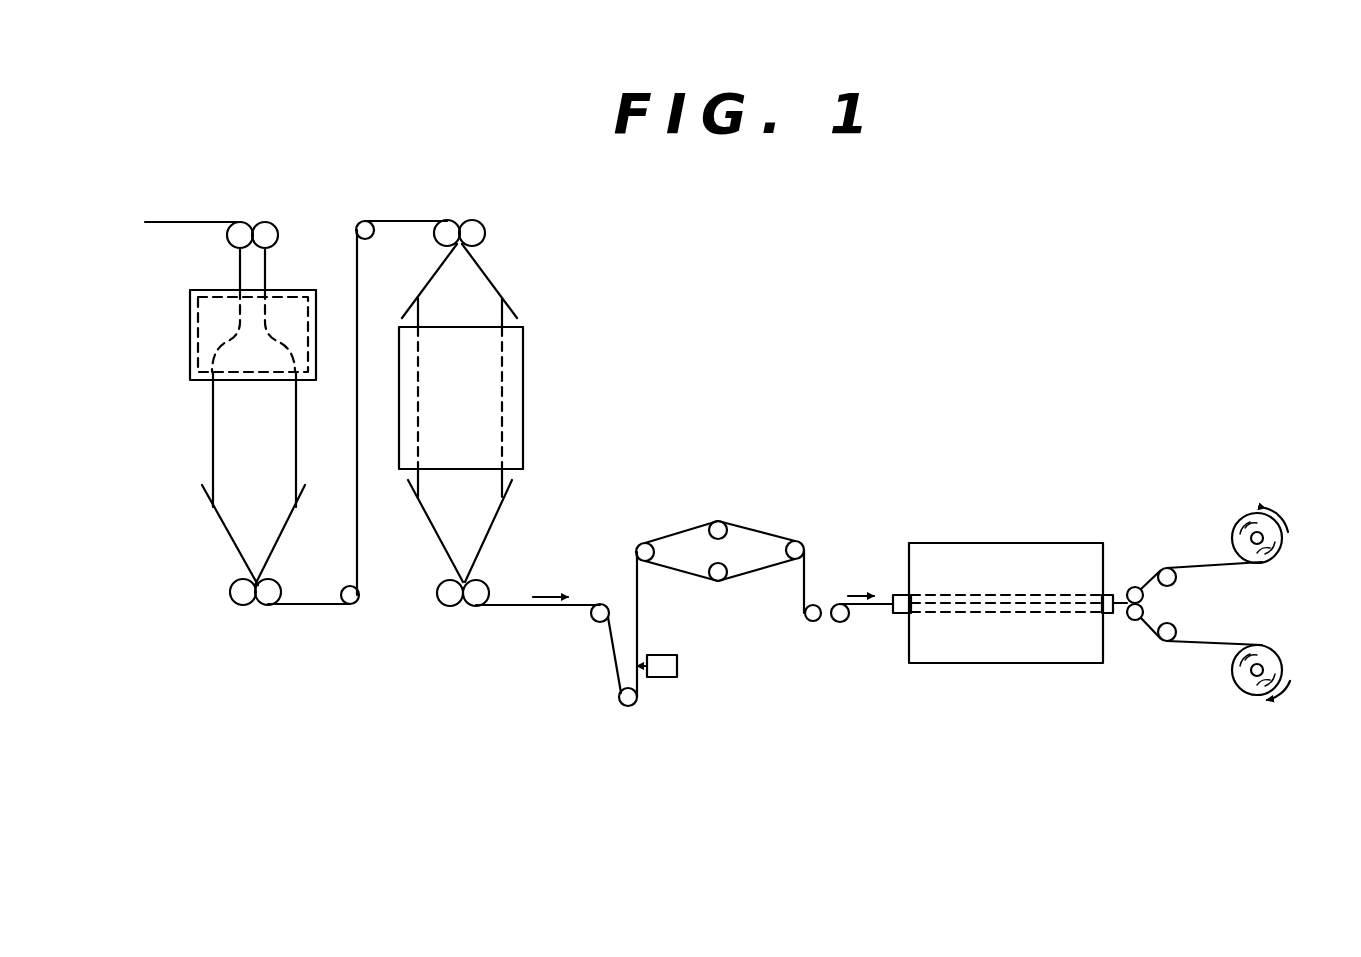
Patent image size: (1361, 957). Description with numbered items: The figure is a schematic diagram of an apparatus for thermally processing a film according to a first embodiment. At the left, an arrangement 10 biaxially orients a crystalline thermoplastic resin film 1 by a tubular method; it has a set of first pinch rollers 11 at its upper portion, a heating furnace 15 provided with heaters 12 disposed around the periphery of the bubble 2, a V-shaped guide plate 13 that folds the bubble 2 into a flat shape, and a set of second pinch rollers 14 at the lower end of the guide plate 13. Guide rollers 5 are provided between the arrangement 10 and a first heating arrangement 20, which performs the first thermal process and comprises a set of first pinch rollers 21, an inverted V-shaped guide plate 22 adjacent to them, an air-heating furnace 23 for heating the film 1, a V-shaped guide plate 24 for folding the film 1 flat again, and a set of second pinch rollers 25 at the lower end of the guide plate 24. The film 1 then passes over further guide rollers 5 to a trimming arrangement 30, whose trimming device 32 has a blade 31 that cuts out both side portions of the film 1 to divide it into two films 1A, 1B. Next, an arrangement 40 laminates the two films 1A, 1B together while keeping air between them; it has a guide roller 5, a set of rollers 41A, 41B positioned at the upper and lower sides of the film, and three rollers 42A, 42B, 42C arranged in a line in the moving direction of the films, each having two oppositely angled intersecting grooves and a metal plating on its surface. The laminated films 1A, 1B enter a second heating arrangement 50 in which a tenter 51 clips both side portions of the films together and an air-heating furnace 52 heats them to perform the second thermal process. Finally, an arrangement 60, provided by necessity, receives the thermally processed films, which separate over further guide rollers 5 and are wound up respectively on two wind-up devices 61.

The crystalline thermoplastic resin film 1 is at (190, 222).
The film part 1A is at (758, 530).
The film part 1B is at (765, 560).
The bubble 2 is at (298, 445).
The guide rollers 5 is at (366, 221).
The arrangement for biaxially orienting 10 is at (188, 362).
The first pinch rollers 11 is at (265, 226).
The heaters 12 is at (192, 308).
The V-shaped guide plate 13 is at (283, 537).
The second pinch rollers 14 is at (268, 605).
The heating furnace 15 is at (309, 290).
The first heating arrangement 20 is at (527, 346).
The first pinch rollers 21 is at (470, 225).
The guide plate 22 is at (482, 254).
The air-heating furnace 23 is at (518, 395).
The V-shaped guide plate 24 is at (488, 535).
The second pinch rollers 25 is at (475, 606).
The trimming arrangement 30 is at (694, 663).
The blade 31 is at (648, 680).
The trimming device 32 is at (665, 655).
The laminating arrangement 40 is at (953, 578).
The roller 41A is at (715, 522).
The roller 41B is at (718, 582).
The grooved roller 42A is at (805, 548).
The grooved roller 42B is at (806, 617).
The grooved roller 42C is at (838, 623).
The second heating arrangement 50 is at (994, 568).
The tenter 51 is at (900, 615).
The air-heating furnace 52 is at (953, 553).
The winding arrangement 60 is at (1285, 604).
The wind-up devices 61 is at (1268, 643).